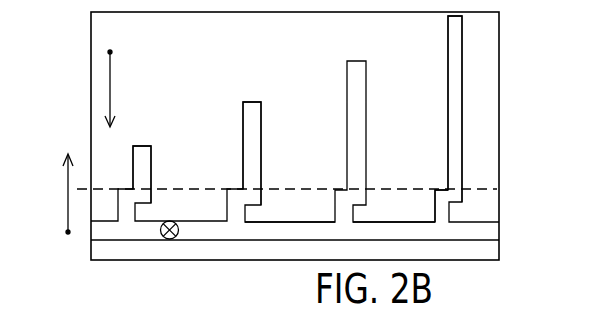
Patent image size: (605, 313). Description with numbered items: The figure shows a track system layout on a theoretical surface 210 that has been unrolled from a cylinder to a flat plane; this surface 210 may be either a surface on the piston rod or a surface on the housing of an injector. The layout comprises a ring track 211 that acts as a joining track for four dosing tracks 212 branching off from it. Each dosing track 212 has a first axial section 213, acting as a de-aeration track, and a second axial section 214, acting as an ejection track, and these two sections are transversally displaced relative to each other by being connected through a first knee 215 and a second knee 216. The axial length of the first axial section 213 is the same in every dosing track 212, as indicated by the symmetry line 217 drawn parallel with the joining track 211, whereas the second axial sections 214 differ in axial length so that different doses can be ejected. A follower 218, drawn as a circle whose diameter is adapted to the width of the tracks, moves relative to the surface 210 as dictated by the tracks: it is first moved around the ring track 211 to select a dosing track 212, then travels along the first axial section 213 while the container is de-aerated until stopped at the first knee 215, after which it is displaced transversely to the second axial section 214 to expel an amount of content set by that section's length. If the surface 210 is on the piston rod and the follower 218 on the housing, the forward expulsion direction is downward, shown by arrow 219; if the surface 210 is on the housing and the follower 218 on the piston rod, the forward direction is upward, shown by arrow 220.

The surface 210 is at (172, 41).
The ring track 211 is at (280, 229).
The dosing track 212 is at (151, 152).
The first axial section 213 is at (440, 212).
The second axial section 214 is at (447, 64).
The first knee 215 is at (438, 190).
The second knee 216 is at (457, 199).
The symmetry line 217 is at (283, 187).
The follower 218 is at (167, 221).
The arrow 219 is at (111, 83).
The arrow 220 is at (68, 200).